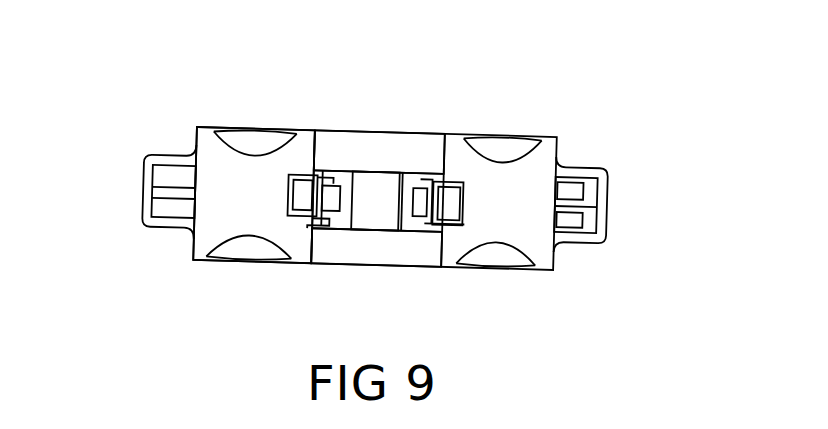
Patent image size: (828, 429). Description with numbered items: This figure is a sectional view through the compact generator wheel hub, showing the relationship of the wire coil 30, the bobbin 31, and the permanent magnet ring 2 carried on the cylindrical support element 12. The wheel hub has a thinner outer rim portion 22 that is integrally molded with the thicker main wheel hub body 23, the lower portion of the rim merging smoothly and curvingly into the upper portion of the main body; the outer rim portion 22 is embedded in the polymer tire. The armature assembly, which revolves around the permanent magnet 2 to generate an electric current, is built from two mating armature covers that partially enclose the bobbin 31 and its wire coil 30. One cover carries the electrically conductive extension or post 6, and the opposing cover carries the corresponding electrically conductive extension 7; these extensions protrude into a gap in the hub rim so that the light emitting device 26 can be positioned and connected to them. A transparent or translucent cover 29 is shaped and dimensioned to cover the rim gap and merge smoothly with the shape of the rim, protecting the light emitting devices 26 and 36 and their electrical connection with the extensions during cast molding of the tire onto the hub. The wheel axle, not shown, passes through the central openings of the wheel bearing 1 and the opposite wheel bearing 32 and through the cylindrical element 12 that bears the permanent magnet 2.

The wheel bearing 1 is at (355, 162).
The permanent magnet 2 is at (425, 202).
The electrically conductive extension or post 6 is at (573, 197).
The electrically conductive extension 7 is at (570, 215).
The cylindrical element 12 is at (408, 223).
The outer rim portion 22 is at (168, 232).
The main wheel hub body 23 is at (207, 262).
The light emitting device 26 is at (583, 207).
The transparent or translucent cover 29 is at (602, 243).
The wire coil 30 is at (448, 197).
The bobbin 31 is at (450, 225).
The wheel bearing 32 is at (353, 252).
The light emitting device 36 is at (167, 198).